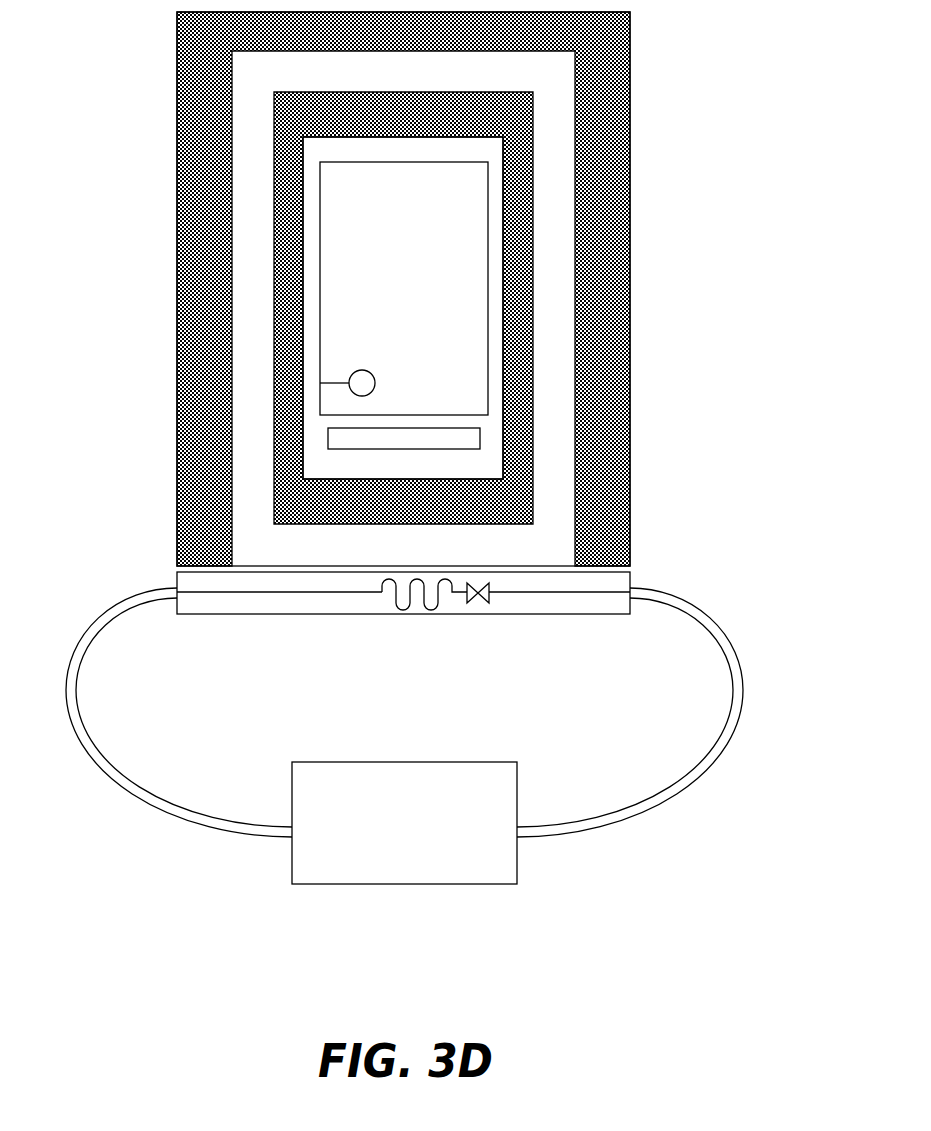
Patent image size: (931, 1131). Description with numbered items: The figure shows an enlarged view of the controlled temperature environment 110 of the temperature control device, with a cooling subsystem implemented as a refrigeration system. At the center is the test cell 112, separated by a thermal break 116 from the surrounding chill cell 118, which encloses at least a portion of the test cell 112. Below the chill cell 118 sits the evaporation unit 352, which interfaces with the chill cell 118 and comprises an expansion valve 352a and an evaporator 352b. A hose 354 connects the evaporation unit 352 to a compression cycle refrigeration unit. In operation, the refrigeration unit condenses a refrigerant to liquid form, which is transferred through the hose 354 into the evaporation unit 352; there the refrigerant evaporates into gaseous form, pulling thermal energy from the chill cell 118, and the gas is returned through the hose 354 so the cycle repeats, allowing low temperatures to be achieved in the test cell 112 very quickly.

The controlled temperature environment 110 is at (132, 72).
The test cell 112 is at (466, 233).
The thermal break 116 is at (521, 336).
The chill cell 118 is at (558, 438).
The evaporation unit 352 is at (632, 573).
The expansion valve 352a is at (485, 597).
The evaporator 352b is at (418, 610).
The hose 354 is at (723, 647).